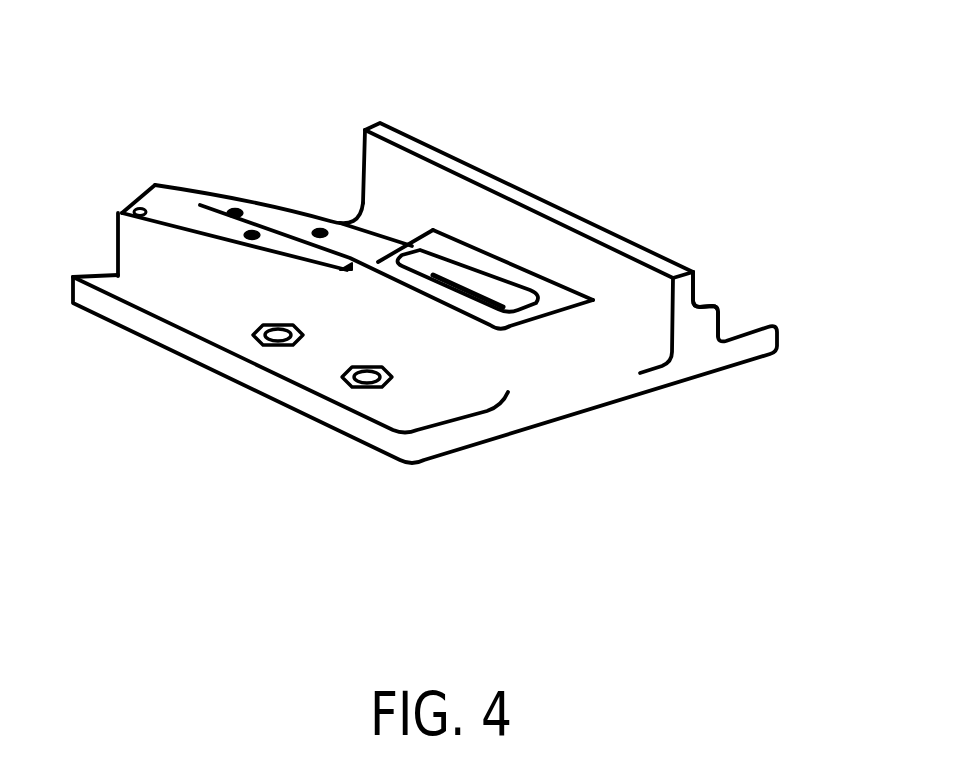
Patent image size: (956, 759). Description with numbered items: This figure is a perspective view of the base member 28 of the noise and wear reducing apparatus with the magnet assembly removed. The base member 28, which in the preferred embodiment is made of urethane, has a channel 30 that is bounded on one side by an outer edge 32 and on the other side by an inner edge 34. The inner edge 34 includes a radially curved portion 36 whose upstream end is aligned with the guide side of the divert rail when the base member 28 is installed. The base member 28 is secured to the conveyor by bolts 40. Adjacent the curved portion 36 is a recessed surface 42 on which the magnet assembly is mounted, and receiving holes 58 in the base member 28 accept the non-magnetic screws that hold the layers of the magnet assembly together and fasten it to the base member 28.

The base member 28 is at (540, 372).
The channel 30 is at (603, 327).
The outer edge 32 is at (497, 232).
The inner edge 34 is at (595, 313).
The radially curved portion 36 is at (252, 202).
The bolts 40 is at (350, 380).
The recessed surface 42 is at (200, 200).
The receiving holes 58 is at (250, 238).